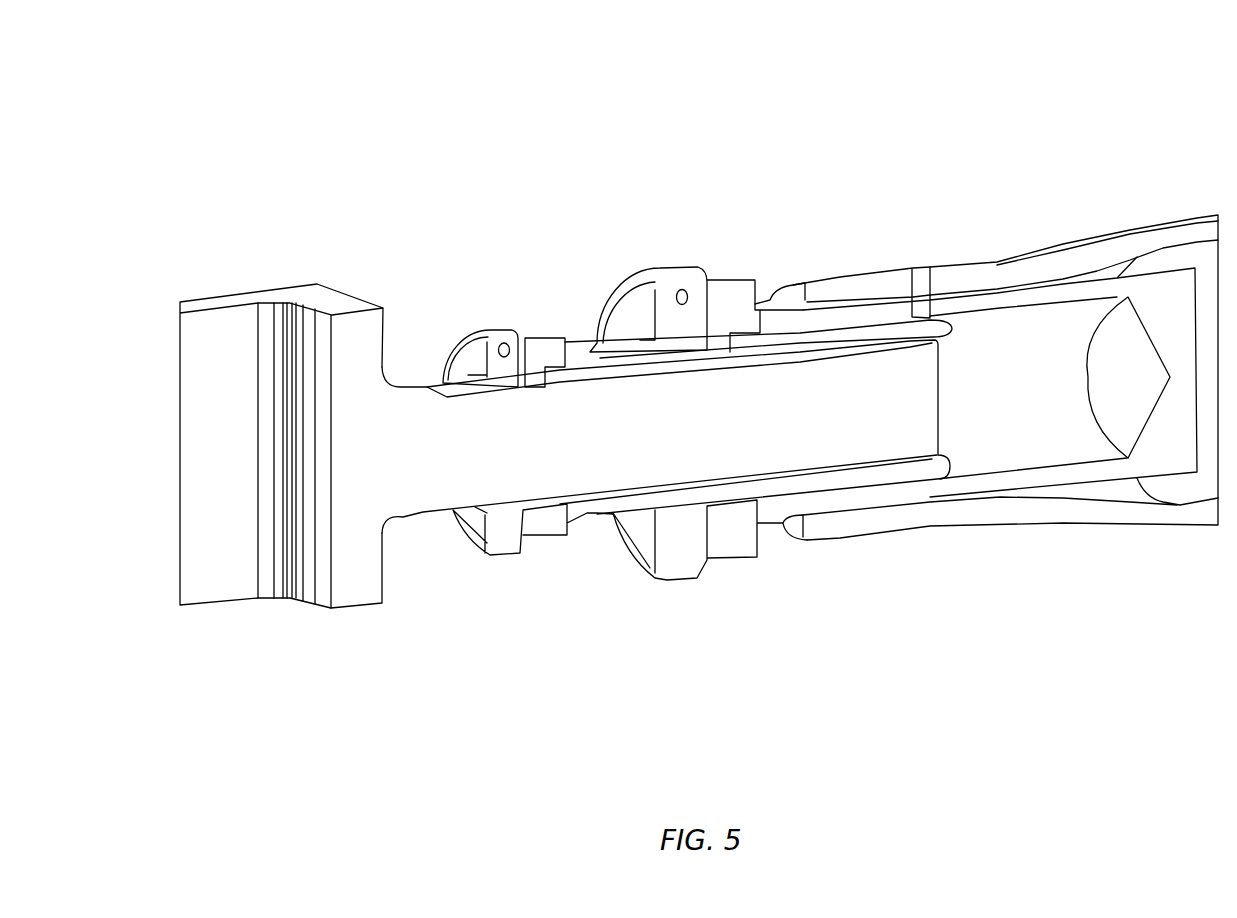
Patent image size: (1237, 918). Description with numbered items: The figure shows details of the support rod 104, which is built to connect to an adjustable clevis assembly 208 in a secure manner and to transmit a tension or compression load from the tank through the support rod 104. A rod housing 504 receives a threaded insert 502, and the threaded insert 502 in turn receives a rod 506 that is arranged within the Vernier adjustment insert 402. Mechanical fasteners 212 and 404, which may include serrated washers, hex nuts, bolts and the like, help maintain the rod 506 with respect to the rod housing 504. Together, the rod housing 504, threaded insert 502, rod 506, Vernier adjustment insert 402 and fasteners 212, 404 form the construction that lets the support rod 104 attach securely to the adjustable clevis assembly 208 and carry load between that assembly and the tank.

The support rod 104 is at (1098, 212).
The adjustable clevis assembly 208 is at (356, 617).
The mechanical fastener 212 is at (537, 556).
The Vernier adjustment insert 402 is at (570, 337).
The mechanical fasteners 404 is at (724, 569).
The threaded insert 502 is at (863, 309).
The rod housing 504 is at (900, 283).
The rod 506 is at (777, 372).